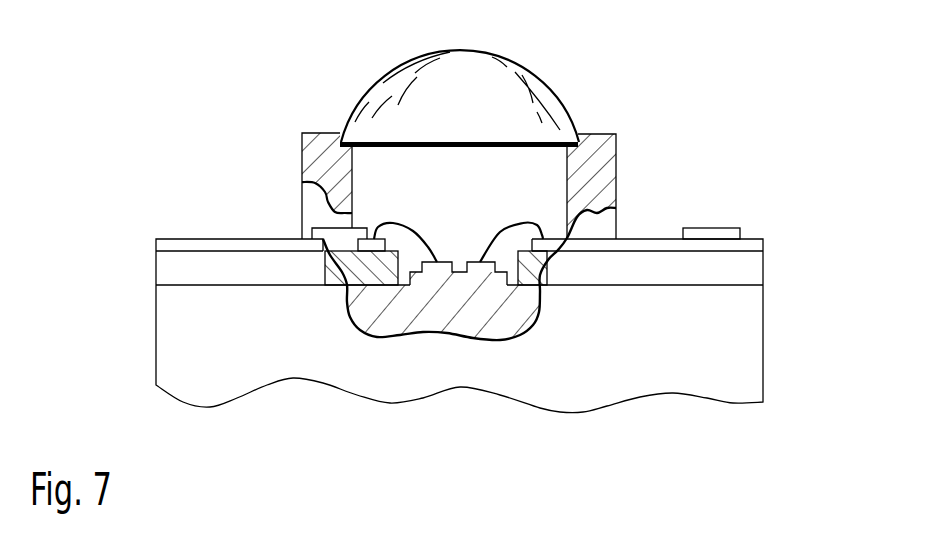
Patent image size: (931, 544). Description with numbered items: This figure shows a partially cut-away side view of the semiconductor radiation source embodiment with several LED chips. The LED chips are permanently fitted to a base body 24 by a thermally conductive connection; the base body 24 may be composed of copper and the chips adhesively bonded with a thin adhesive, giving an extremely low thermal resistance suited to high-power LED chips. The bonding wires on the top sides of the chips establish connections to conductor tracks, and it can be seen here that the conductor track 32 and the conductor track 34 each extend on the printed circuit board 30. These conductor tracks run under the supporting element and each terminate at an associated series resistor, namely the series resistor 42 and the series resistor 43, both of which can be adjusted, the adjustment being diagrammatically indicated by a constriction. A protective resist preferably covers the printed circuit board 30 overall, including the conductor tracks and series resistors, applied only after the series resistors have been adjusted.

The base body 24 is at (605, 390).
The printed circuit board 30 is at (752, 269).
The conductor track 32 is at (603, 226).
The conductor track 34 is at (371, 282).
The series resistor 42 is at (730, 228).
The series resistor 43 is at (330, 227).